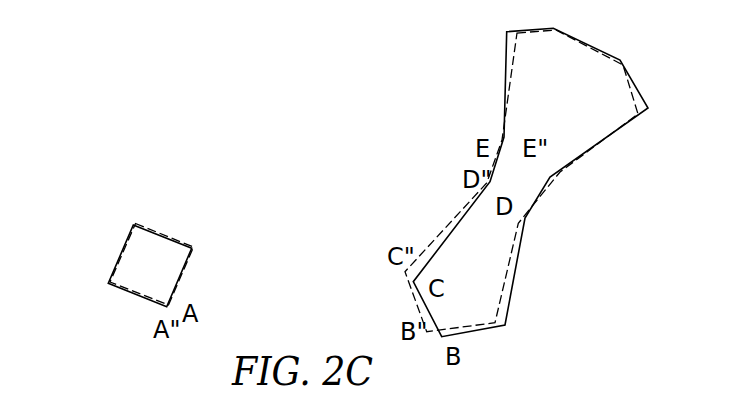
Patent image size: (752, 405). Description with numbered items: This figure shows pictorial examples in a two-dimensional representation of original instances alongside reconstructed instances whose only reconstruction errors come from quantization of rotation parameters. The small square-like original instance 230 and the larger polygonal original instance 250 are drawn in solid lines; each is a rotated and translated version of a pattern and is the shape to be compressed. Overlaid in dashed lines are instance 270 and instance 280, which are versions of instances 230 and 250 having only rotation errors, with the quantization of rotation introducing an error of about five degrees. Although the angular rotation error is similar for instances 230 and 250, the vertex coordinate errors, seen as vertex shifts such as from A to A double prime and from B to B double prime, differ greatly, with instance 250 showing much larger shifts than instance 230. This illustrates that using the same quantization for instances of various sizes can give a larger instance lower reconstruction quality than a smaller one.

The original instance 230 is at (108, 281).
The original instance 250 is at (623, 125).
The instance with rotation error 270 is at (188, 245).
The instance with rotation error 280 is at (598, 144).